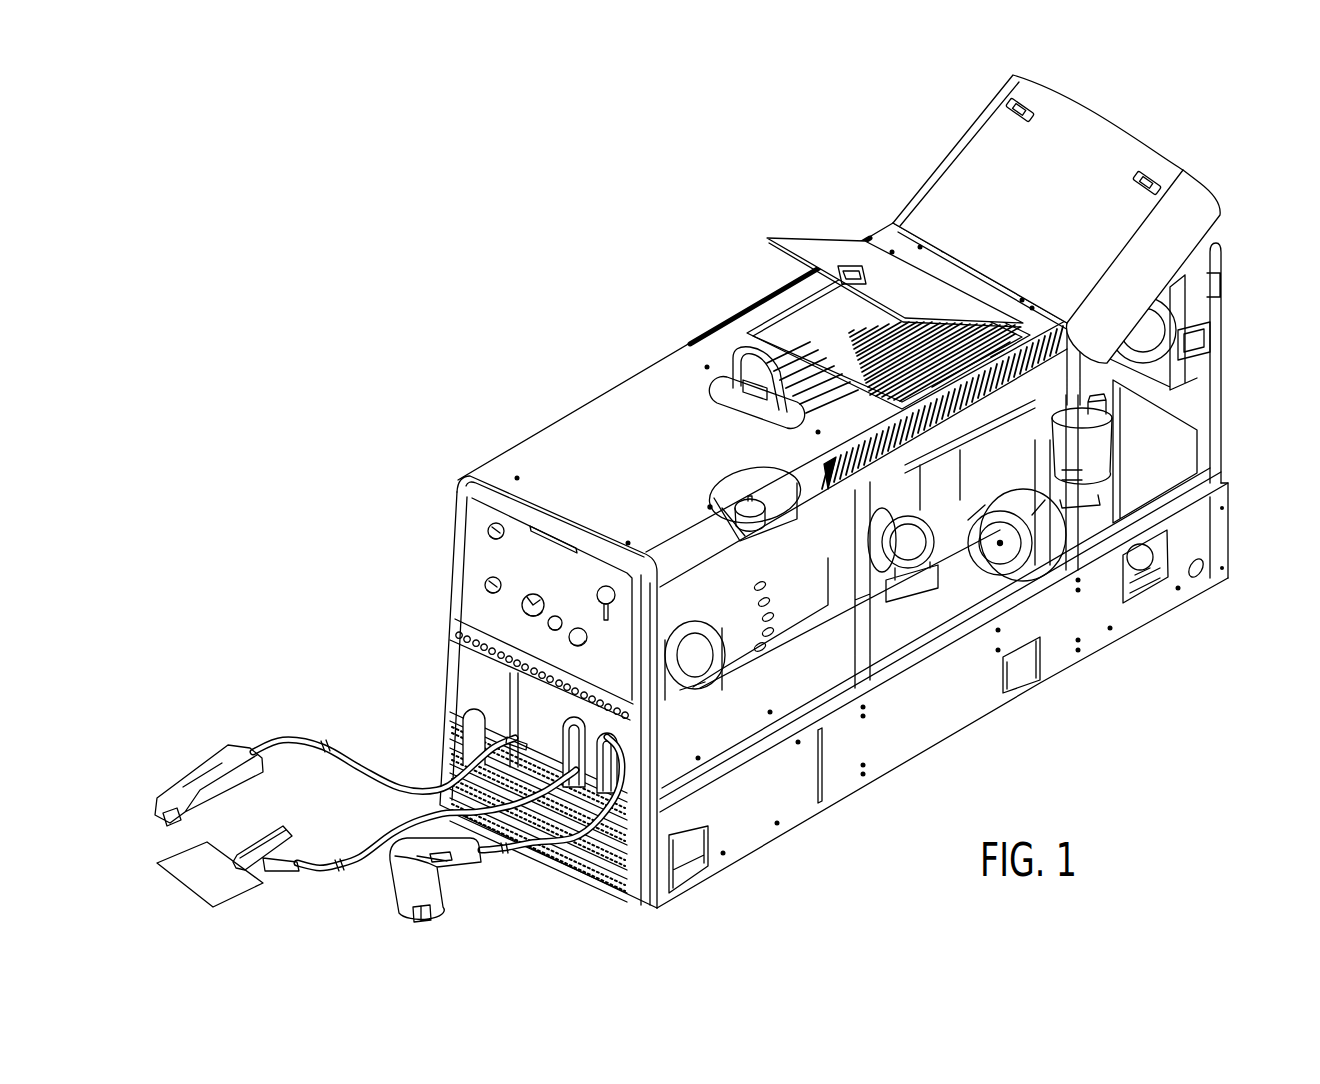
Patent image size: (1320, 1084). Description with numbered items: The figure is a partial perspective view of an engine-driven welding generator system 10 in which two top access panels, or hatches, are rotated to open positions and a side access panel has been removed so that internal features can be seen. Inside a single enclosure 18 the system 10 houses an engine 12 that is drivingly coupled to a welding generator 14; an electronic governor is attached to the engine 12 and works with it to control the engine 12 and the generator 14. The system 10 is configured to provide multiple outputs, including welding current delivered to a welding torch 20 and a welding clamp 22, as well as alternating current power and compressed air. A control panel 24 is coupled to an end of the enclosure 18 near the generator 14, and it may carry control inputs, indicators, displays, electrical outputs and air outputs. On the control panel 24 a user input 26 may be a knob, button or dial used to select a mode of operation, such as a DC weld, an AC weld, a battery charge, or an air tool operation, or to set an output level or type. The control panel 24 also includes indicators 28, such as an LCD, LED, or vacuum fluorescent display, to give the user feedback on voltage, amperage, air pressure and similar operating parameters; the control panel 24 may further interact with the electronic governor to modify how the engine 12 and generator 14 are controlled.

The engine-driven welding generator system 10 is at (1178, 126).
The engine 12 is at (803, 291).
The welding generator 14 is at (790, 626).
The enclosure 18 is at (556, 333).
The welding torch 20 is at (227, 762).
The welding clamp 22 is at (283, 834).
The control panel 24 is at (487, 546).
The user input 26 is at (600, 581).
The indicator 28 is at (517, 604).